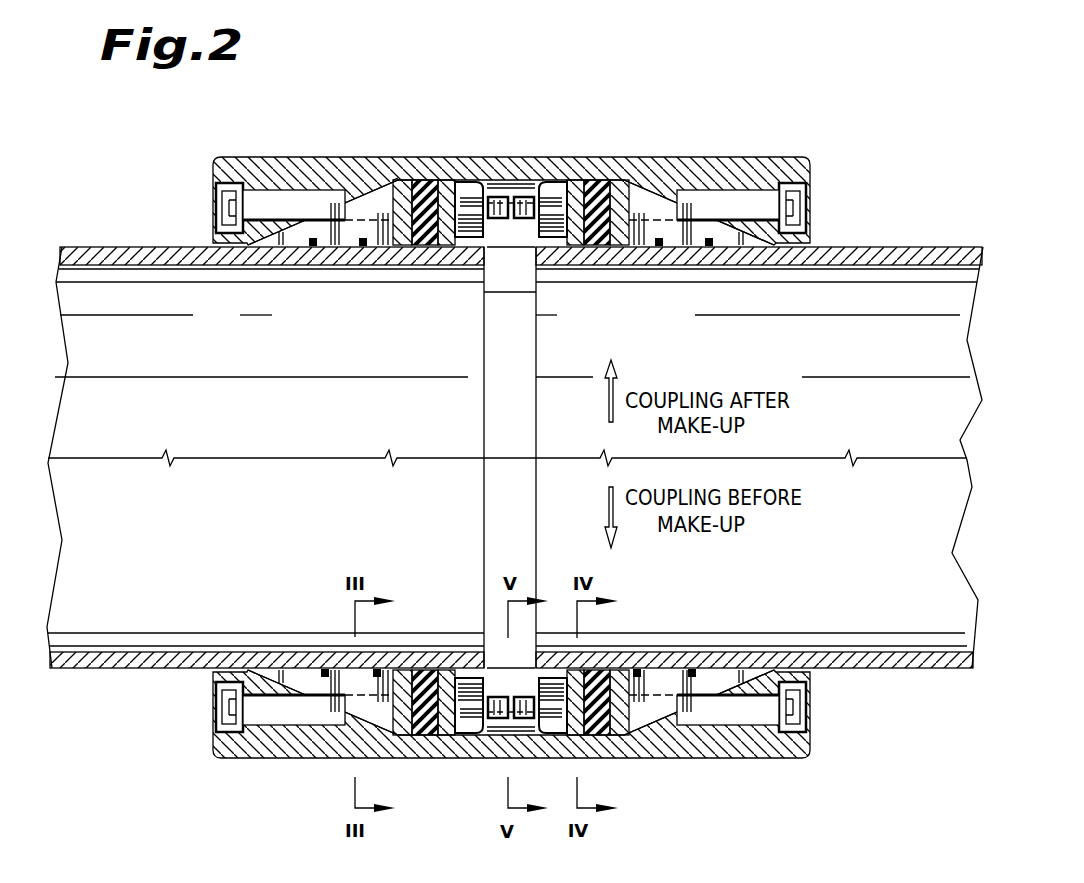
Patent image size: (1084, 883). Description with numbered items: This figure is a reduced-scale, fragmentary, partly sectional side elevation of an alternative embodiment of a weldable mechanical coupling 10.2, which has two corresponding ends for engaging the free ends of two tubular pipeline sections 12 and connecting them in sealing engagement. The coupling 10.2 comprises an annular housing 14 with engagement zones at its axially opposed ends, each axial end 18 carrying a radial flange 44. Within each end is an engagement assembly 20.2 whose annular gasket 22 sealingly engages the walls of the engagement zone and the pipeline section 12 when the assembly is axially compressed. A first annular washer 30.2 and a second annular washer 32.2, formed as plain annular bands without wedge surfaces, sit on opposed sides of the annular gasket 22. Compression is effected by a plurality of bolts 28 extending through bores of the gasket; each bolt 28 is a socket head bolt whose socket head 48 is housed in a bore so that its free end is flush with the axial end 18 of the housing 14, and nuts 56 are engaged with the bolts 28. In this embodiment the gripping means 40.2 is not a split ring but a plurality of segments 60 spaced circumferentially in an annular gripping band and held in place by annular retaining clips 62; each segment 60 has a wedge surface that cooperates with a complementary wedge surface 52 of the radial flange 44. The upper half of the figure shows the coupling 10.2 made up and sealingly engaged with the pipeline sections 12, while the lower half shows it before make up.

The coupling 10.2 is at (522, 93).
The pipeline section 12 is at (906, 250).
The annular housing 14 is at (677, 157).
The axial end 18 is at (215, 167).
The engagement assembly 20.2 is at (447, 180).
The annular gasket 22 is at (427, 180).
The bolt 28 is at (277, 200).
The first annular washer 30.2 is at (447, 247).
The second annular washer 32.2 is at (393, 185).
The gripping means 40.2 is at (330, 197).
The radial flange 44 is at (248, 246).
The socket head 48 is at (222, 203).
The wedge surface 52 is at (398, 178).
The nut 56 is at (470, 247).
The segment 60 is at (350, 247).
The annular retaining clip 62 is at (313, 247).